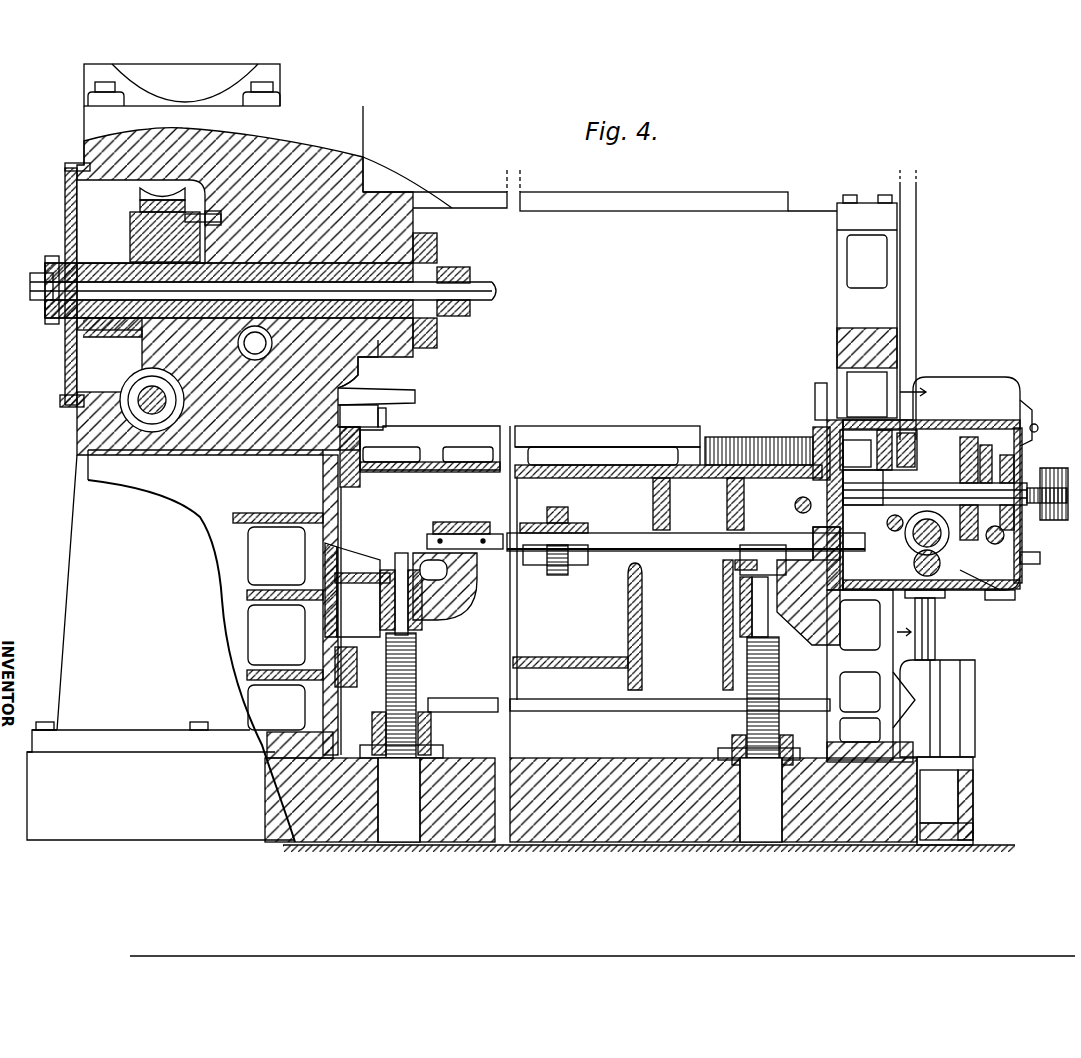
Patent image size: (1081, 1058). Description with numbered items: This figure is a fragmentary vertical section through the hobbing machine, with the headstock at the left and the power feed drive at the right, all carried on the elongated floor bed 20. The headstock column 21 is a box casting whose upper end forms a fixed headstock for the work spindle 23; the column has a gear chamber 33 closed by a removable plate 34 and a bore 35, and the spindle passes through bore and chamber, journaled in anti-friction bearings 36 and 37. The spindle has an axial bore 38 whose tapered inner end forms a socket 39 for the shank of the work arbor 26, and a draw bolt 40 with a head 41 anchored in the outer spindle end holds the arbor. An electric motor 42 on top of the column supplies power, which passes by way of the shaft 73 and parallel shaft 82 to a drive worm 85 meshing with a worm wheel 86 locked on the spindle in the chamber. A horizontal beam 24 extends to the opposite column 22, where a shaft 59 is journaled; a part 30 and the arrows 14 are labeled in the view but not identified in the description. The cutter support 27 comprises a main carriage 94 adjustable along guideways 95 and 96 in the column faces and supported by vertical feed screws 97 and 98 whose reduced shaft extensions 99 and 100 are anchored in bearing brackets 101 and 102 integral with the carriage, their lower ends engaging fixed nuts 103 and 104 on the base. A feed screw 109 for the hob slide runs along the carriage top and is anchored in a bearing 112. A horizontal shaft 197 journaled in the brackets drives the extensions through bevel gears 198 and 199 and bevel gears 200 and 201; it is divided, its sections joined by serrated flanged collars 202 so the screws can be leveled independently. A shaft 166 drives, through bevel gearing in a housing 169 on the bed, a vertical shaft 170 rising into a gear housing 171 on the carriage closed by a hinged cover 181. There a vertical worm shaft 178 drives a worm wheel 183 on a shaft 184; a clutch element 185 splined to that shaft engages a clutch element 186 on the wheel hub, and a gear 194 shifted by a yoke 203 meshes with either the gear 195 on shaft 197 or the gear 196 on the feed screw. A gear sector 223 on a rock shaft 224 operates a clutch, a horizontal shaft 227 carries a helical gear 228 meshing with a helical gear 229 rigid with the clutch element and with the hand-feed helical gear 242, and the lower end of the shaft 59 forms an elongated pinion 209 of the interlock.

The electric motor 42 is at (276, 76).
The worm wheel 86 is at (142, 197).
The anti-friction bearing 36 is at (165, 250).
The head 41 is at (32, 278).
The axial bore 38 is at (46, 312).
The draw bolt 40 is at (108, 326).
The removable plate 34 is at (64, 374).
The gear chamber 33 is at (62, 398).
The parallel shaft 82 is at (152, 430).
The drive worm 85 is at (165, 418).
The shaft 73 is at (255, 360).
The anti-friction bearing 37 is at (426, 254).
The socket 39 is at (455, 272).
The work arbor 26 is at (497, 302).
The work spindle 23 is at (452, 315).
The bore 35 is at (356, 382).
The column 21 is at (416, 397).
The guideway 95 is at (386, 416).
The horizontal beam 24 is at (676, 200).
The table rail 30 is at (752, 212).
The column 22 is at (880, 302).
The shaft 59 is at (910, 276).
The direction arrow 14 is at (923, 509).
The hinged cover 181 is at (988, 375).
The bearing 112 is at (838, 452).
The gear 196 is at (832, 418).
The clutch element 185 is at (962, 440).
The clutch element 186 is at (982, 445).
The worm wheel 183 is at (1005, 455).
The shaft 184 is at (990, 478).
The gear housing 171 is at (1030, 470).
The helical gear 229 is at (912, 478).
The rock shaft 224 is at (1005, 535).
The elongated pinion 209 is at (905, 548).
The helical gear 242 is at (935, 576).
The gear sector 223 is at (1025, 564).
The vertical worm shaft 178 is at (1005, 580).
The horizontal shaft 227 is at (1010, 596).
The gear 194 is at (825, 490).
The yoke 203 is at (795, 508).
The bevel gear 200 is at (815, 534).
The cutter support 27 is at (593, 428).
The main carriage 94 is at (620, 452).
The feed screw 109 is at (730, 437).
The guideway 96 is at (815, 455).
The horizontal shaft 197 is at (672, 552).
The flanged collars 202 is at (575, 510).
The bevel gear 198 is at (432, 522).
The bevel gear 199 is at (390, 560).
The reduced shaft extension 99 is at (395, 598).
The bearing bracket 101 is at (460, 604).
The vertical feed screw 97 is at (432, 728).
The fixed nut 103 is at (440, 748).
The bevel gear 201 is at (745, 570).
The reduced shaft extension 100 is at (758, 600).
The bearing bracket 102 is at (745, 618).
The vertical feed screw 98 is at (733, 728).
The fixed nut 104 is at (725, 748).
The shaft 166 is at (690, 680).
The gear 195 is at (876, 612).
The helical gear 228 is at (870, 695).
The vertical shaft 170 is at (945, 642).
The housing 169 is at (950, 694).
The floor bed 20 is at (585, 740).